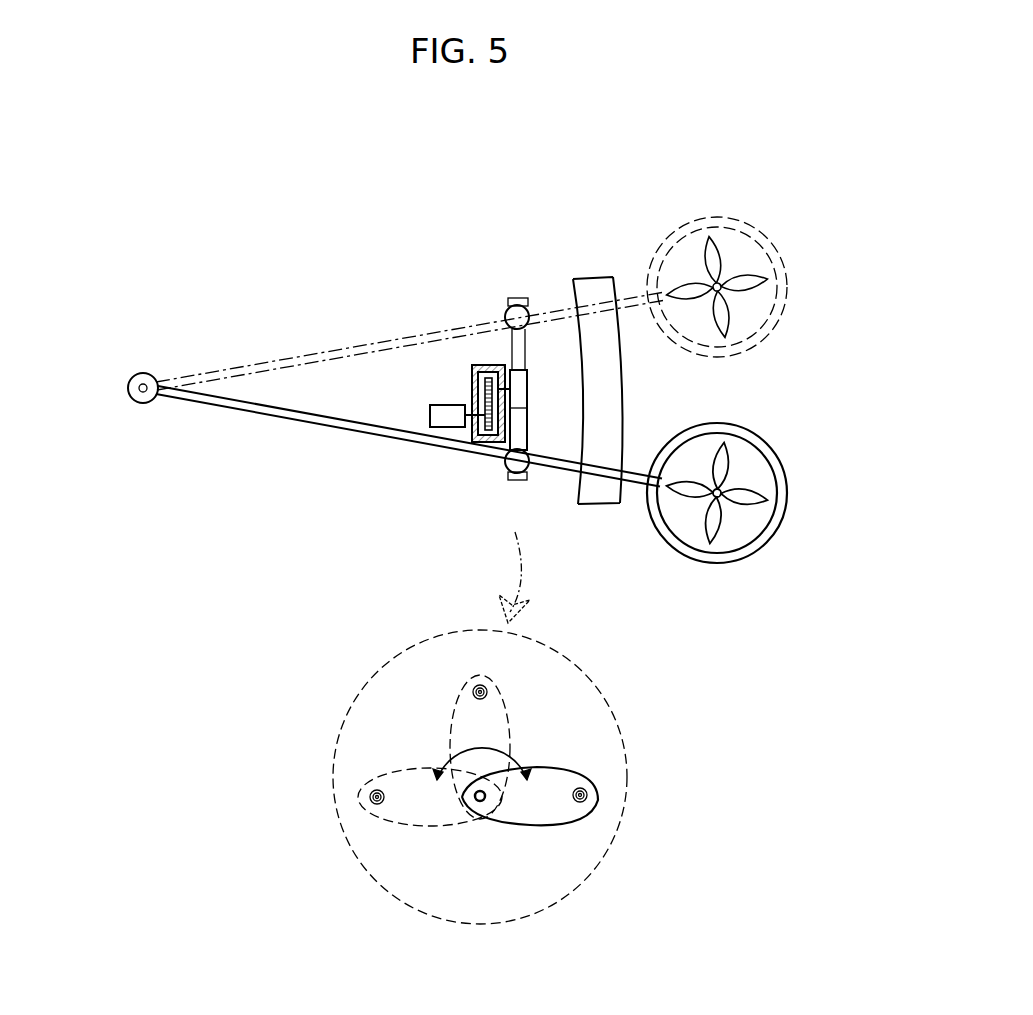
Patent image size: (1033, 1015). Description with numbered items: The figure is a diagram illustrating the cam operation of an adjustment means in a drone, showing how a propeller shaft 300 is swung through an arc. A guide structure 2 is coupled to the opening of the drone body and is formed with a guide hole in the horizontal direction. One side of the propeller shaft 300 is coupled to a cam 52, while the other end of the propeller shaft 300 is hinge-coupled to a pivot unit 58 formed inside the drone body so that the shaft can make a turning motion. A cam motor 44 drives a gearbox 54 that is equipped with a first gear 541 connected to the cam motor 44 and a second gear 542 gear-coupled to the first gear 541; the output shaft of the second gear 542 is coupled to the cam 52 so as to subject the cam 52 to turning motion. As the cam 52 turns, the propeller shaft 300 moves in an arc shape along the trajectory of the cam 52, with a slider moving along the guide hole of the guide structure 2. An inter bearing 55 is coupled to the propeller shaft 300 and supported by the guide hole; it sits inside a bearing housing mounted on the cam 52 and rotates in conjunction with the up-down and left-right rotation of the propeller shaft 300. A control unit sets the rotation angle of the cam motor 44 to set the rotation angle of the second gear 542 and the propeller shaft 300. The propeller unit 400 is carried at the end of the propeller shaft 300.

The guide structure 2 is at (593, 278).
The cam motor 44 is at (433, 404).
The cam 52 is at (528, 445).
The gearbox 54 is at (477, 366).
The inter bearing 55 is at (525, 313).
The pivot unit 58 is at (133, 376).
The propeller shaft 300 is at (292, 428).
The propeller unit 400 is at (718, 540).
The first gear 541 is at (481, 437).
The second gear 542 is at (481, 372).